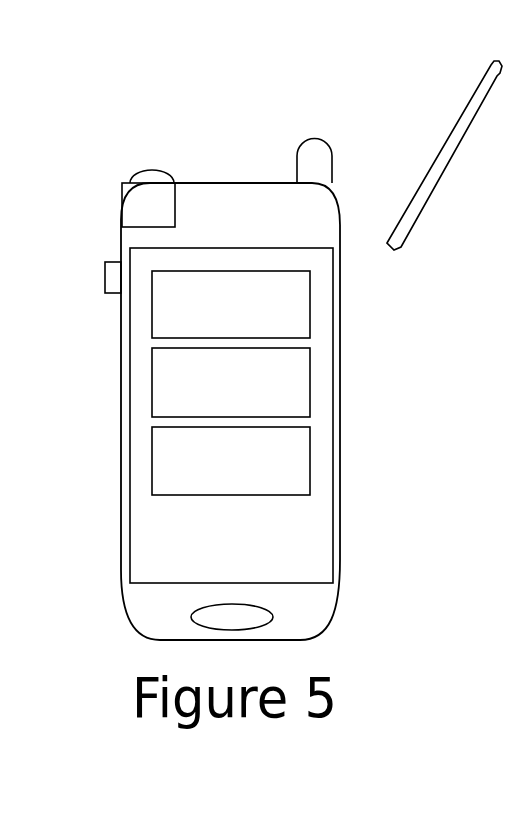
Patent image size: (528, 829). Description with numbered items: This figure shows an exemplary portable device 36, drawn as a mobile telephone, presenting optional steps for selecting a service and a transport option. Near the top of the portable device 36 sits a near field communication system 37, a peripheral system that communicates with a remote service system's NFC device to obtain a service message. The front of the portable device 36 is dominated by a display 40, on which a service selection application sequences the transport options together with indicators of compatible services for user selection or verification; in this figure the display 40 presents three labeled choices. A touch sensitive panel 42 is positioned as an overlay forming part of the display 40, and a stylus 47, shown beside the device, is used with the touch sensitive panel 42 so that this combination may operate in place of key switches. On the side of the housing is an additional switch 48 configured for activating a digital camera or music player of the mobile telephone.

The portable device 36 is at (236, 183).
The near field communication (NFC) system 37 is at (167, 220).
The display 40 is at (340, 432).
The touch sensitive panel 42 is at (108, 248).
The stylus 47 is at (433, 193).
The additional switch 48 is at (105, 272).